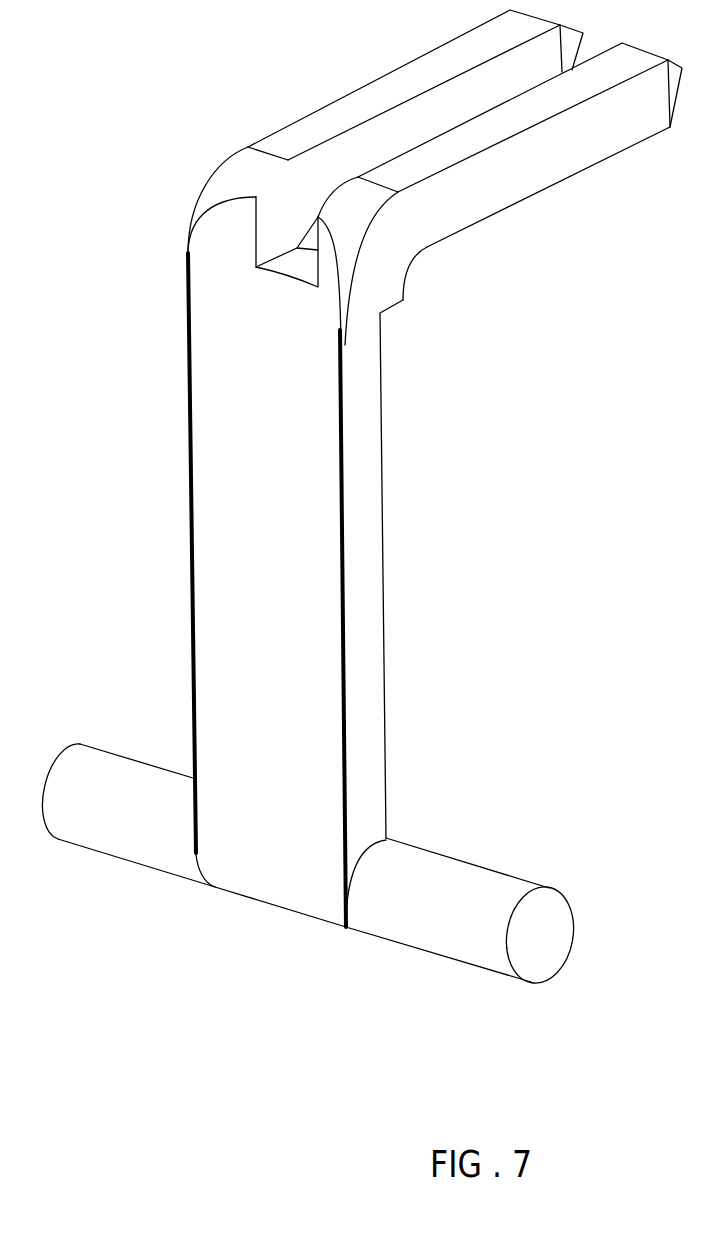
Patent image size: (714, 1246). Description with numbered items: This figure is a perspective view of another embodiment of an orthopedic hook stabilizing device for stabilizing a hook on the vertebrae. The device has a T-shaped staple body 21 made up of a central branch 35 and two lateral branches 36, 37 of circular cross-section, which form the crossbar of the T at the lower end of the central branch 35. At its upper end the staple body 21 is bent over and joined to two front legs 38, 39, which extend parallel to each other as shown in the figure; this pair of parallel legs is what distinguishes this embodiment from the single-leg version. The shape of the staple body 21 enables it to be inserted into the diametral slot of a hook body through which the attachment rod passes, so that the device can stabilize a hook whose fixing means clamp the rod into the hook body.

The staple body 21 is at (290, 430).
The central branch 35 is at (230, 375).
The lateral branch 36 is at (153, 790).
The lateral branch 37 is at (443, 892).
The front leg 38 is at (378, 97).
The front leg 39 is at (467, 188).